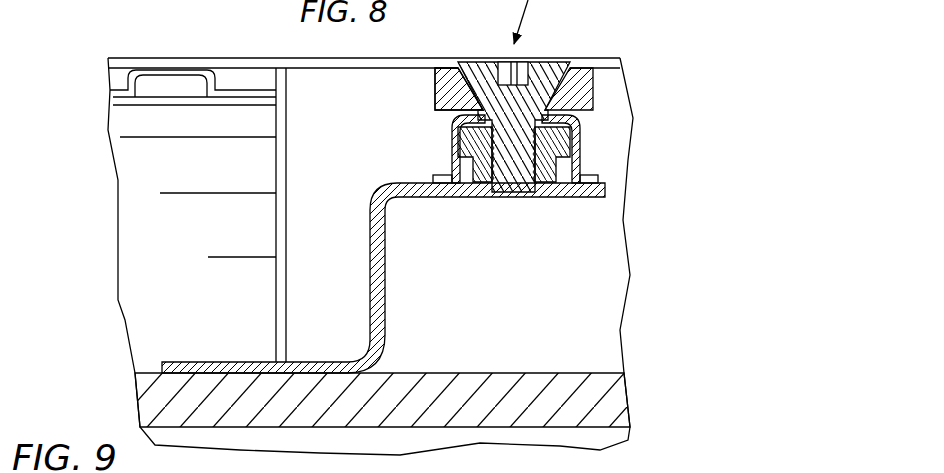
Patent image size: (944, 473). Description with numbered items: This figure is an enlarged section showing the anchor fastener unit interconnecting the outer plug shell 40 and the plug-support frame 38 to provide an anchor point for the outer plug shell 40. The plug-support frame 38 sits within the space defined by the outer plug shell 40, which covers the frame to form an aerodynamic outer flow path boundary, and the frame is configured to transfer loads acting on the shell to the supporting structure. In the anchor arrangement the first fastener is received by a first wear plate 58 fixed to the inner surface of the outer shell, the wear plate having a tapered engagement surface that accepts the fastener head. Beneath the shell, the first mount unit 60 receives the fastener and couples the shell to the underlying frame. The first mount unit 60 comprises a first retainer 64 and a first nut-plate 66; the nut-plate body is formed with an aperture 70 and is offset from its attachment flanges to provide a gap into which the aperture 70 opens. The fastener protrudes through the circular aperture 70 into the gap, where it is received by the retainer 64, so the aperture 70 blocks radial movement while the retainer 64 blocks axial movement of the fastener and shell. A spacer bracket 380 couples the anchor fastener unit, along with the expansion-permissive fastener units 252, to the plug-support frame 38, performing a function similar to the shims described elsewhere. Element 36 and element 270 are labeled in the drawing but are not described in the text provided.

The bolt 36 is at (542, 73).
The plug-support frame 38 is at (602, 400).
The outer plug shell 40 is at (603, 60).
The first wear plate 58 is at (576, 88).
The first mount unit 60 is at (540, 156).
The first retainer 64 is at (474, 130).
The first nut-plate 66 is at (582, 137).
The aperture 70 is at (480, 105).
The spacer bracket 380 is at (378, 275).
The expansion-permissive fastener units 252 is at (461, 467).
The element 270 is at (593, 467).